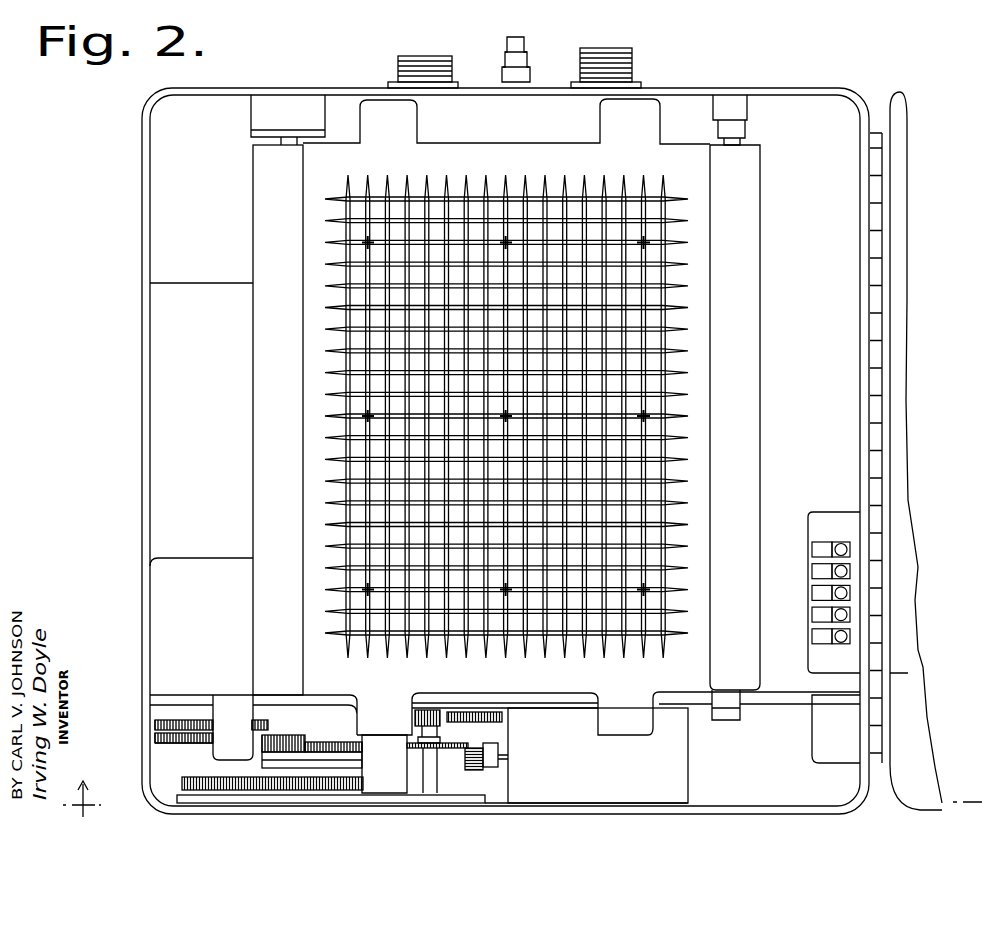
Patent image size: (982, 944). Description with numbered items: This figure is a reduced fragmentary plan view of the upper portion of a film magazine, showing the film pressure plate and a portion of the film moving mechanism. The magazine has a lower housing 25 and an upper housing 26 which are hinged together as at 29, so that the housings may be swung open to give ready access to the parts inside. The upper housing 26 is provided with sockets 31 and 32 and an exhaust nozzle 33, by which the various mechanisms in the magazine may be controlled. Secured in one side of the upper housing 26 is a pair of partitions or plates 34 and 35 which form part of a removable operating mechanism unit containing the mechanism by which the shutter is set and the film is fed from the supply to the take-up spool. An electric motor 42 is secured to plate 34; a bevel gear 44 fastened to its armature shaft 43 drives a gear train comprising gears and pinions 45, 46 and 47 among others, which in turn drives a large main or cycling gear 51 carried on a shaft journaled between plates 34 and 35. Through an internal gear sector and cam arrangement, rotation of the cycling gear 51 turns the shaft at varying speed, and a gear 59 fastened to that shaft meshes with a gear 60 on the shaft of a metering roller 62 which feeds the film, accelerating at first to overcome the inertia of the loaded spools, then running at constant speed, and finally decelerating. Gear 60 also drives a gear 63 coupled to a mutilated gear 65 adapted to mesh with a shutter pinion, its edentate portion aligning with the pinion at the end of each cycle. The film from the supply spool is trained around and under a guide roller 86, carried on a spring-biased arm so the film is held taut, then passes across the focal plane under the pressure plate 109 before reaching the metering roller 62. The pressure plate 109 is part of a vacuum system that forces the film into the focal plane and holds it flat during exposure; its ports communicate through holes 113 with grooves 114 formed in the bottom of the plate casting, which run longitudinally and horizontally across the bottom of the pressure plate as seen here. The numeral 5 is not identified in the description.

The section line 5 is at (81, 799).
The lower housing 25 is at (898, 118).
The upper housing 26 is at (770, 92).
The hinge 29 is at (878, 190).
The socket 31 is at (442, 55).
The socket 32 is at (628, 55).
The exhaust nozzle 33 is at (523, 41).
The plate 34 is at (190, 700).
The plate 35 is at (197, 797).
The electric motor 42 is at (672, 760).
The armature shaft 43 is at (502, 753).
The bevel gear 44 is at (473, 767).
The gear 45 is at (443, 750).
The gear 46 is at (450, 710).
The gear 47 is at (462, 725).
The main cycling gear 51 is at (193, 776).
The gear 59 is at (334, 745).
The gear 60 is at (306, 740).
The metering roller 62 is at (267, 417).
The gear 63 is at (175, 745).
The mutilated gear 65 is at (167, 722).
The roller 86 is at (745, 378).
The pressure plate 109 is at (514, 139).
The holes 113 is at (495, 403).
The grooves 114 is at (605, 183).